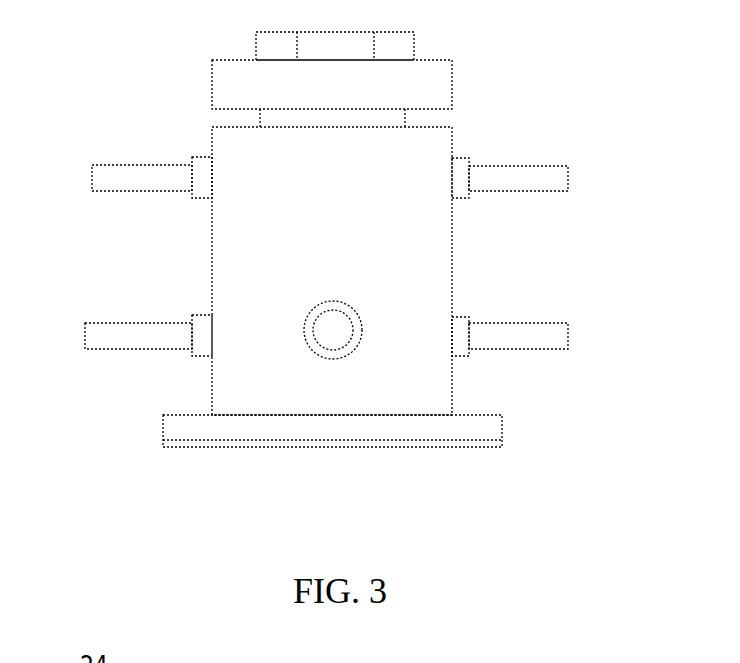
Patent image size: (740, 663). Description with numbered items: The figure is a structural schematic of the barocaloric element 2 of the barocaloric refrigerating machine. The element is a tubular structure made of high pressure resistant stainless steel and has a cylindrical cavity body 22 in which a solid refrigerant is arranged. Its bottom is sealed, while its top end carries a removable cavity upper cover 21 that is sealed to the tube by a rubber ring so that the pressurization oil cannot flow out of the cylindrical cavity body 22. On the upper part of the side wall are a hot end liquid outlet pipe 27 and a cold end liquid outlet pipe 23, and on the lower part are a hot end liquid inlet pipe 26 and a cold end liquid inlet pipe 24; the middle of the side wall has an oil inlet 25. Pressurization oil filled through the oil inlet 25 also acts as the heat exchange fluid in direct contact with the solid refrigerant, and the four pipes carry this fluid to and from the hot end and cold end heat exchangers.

The barocaloric element 2 is at (405, 280).
The cavity upper cover 21 is at (422, 73).
The cylindrical cavity body 22 is at (433, 153).
The cold end liquid outlet pipe 23 is at (503, 177).
The cold end liquid inlet pipe 24 is at (528, 335).
The oil inlet 25 is at (346, 340).
The hot end liquid inlet pipe 26 is at (132, 335).
The hot end liquid outlet pipe 27 is at (133, 173).